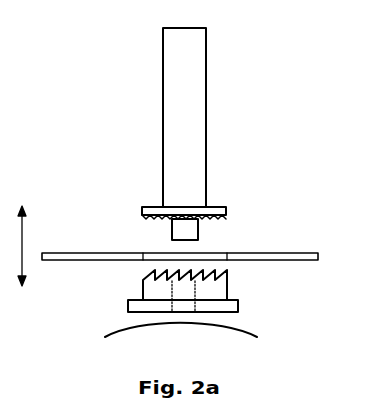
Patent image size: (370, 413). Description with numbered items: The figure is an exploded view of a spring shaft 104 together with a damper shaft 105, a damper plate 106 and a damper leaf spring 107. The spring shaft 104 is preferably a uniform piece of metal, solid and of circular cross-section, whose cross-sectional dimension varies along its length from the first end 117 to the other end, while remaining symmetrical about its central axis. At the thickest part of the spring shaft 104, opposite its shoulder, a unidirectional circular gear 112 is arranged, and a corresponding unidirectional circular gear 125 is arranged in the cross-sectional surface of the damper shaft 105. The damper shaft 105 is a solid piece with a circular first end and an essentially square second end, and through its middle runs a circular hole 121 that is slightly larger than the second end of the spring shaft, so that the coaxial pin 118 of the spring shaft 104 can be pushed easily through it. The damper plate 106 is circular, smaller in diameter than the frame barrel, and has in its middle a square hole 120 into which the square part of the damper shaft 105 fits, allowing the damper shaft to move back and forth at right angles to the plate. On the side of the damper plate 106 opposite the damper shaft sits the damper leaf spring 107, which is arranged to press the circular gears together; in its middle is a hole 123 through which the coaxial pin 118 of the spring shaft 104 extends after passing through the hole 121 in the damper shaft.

The spring shaft 104 is at (138, 147).
The damper shaft 105 is at (227, 290).
The damper plate 106 is at (292, 253).
The damper leaf spring 107 is at (257, 338).
The unidirectional circular gear 112 is at (226, 205).
The first end of the spring shaft 117 is at (206, 79).
The coaxial pin 118 is at (172, 232).
The square hole 120 is at (218, 252).
The circular hole 121 is at (182, 312).
The hole in the damper leaf spring 123 is at (183, 324).
The unidirectional circular gear 125 is at (143, 278).